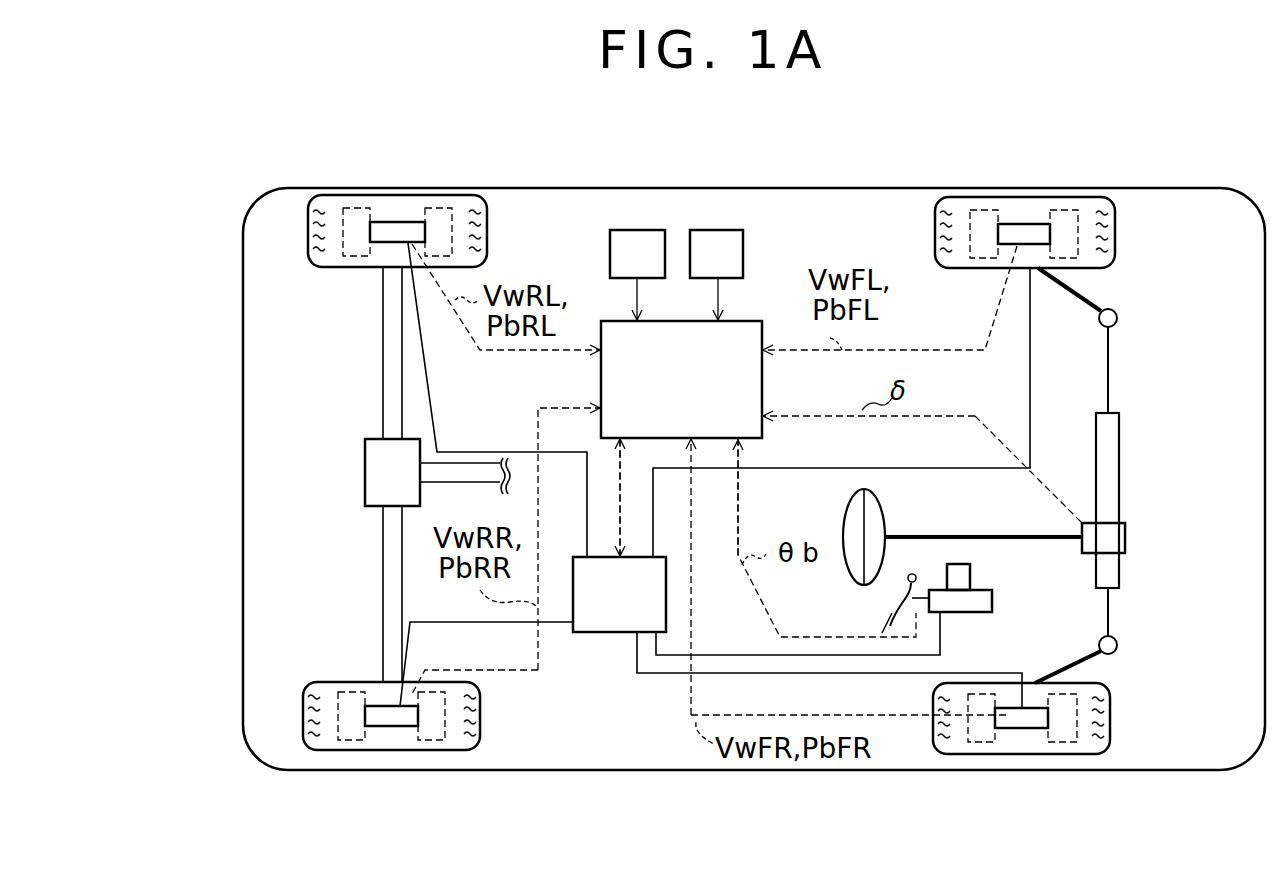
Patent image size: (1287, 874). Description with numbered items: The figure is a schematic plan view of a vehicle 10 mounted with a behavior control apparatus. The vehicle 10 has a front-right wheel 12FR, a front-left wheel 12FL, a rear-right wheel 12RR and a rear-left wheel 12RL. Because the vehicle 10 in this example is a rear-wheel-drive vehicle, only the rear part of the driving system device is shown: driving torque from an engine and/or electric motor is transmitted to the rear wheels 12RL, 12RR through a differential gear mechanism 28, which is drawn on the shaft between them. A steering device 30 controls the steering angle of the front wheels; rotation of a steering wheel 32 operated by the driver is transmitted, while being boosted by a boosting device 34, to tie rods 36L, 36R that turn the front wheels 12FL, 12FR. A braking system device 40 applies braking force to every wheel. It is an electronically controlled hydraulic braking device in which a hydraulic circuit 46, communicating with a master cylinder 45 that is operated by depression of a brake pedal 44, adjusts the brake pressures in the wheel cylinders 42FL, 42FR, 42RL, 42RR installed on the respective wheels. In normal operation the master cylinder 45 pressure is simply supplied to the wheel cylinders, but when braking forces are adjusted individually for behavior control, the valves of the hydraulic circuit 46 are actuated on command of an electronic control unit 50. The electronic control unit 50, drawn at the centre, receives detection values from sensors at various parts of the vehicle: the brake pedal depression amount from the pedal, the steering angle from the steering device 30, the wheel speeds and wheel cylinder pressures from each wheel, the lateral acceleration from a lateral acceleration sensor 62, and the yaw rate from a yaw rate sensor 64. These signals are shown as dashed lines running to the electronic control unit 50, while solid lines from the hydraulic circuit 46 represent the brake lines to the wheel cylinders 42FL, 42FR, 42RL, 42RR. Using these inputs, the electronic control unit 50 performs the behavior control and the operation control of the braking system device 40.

The vehicle 10 is at (790, 186).
The rear-left wheel 12RL is at (312, 228).
The rear-right wheel 12RR is at (300, 719).
The front-left wheel 12FL is at (1078, 200).
The front-right wheel 12FR is at (1113, 722).
The wheel cylinder 42RL is at (403, 232).
The wheel cylinder 42RR is at (385, 720).
The wheel cylinder 42FL is at (1021, 232).
The wheel cylinder 42FR is at (1028, 722).
The differential gear mechanism 28 is at (410, 487).
The electronic control unit 50 is at (698, 395).
The lateral acceleration sensor 62 is at (614, 232).
The yaw rate sensor 64 is at (745, 256).
The hydraulic circuit 46 is at (637, 610).
The braking system device 40 is at (715, 481).
The steering device 30 is at (1128, 500).
The steering wheel 32 is at (843, 520).
The boosting device 34 is at (1120, 547).
The tie rod 36L is at (1090, 296).
The tie rod 36R is at (1088, 658).
The brake pedal 44 is at (882, 628).
The master cylinder 45 is at (962, 613).